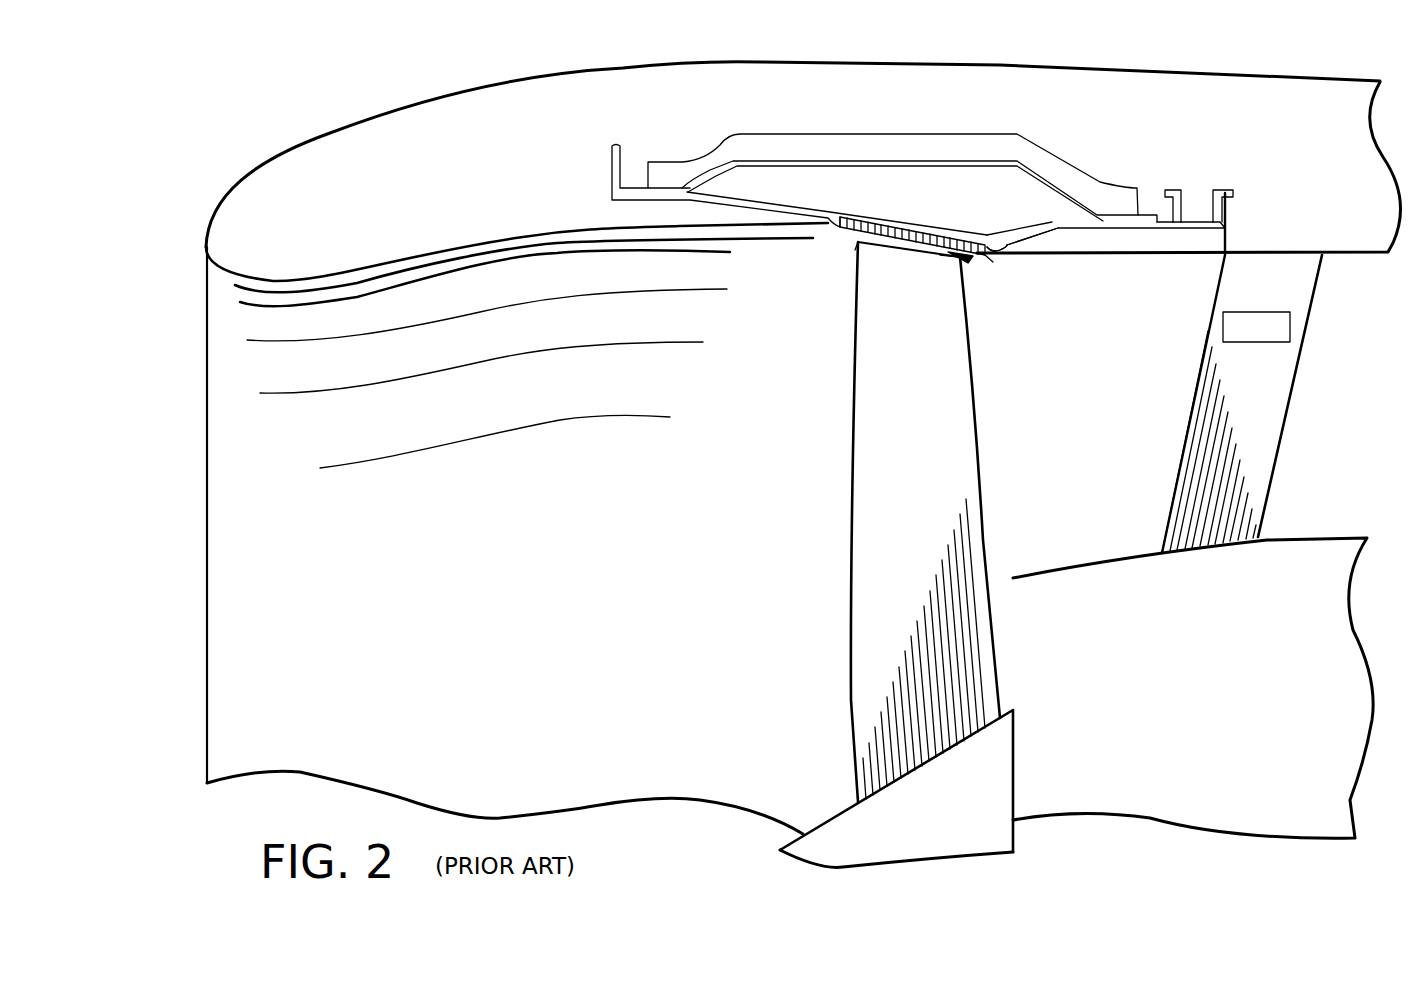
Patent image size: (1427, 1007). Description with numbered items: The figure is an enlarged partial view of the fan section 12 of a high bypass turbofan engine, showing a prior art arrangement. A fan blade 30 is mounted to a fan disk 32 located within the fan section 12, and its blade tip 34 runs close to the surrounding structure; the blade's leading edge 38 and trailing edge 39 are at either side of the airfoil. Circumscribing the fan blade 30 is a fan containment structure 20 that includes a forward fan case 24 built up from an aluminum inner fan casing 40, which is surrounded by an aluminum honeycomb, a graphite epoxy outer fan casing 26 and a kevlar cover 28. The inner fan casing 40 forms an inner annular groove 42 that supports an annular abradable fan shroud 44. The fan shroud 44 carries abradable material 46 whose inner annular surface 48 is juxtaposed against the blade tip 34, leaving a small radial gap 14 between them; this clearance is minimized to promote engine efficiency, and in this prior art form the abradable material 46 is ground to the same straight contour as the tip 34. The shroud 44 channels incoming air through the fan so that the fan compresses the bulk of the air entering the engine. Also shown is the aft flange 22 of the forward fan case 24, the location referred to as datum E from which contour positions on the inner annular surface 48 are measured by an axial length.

The fan section 12 is at (330, 132).
The radial gap 14 is at (975, 268).
The fan containment structure 20 is at (810, 131).
The aft flange 22 is at (1228, 213).
The forward fan case 24 is at (1104, 154).
The outer fan casing 26 is at (988, 162).
The kevlar cover 28 is at (906, 150).
The fan blade 30 is at (924, 522).
The fan disk 32 is at (843, 807).
The blade tip 34 is at (860, 256).
The leading edge 38 is at (853, 440).
The trailing edge 39 is at (985, 430).
The inner fan casing 40 is at (1093, 230).
The inner annular groove 42 is at (848, 230).
The abradable fan shroud 44 is at (991, 268).
The abradable material 46 is at (809, 198).
The inner annular surface 48 is at (944, 258).